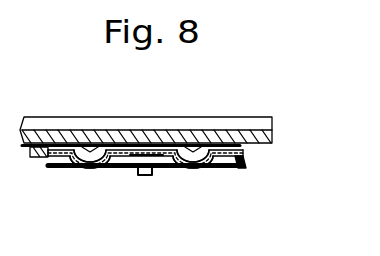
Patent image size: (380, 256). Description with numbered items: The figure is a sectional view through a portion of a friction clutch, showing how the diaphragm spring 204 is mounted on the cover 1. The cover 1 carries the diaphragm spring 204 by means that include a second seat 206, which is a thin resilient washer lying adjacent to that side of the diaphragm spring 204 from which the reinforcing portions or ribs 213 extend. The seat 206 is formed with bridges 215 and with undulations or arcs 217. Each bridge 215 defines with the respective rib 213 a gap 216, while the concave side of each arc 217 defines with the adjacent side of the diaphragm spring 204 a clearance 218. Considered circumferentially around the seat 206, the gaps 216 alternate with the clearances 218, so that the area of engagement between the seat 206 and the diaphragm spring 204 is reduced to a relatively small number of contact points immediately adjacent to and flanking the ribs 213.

The cover 1 is at (250, 122).
The diaphragm spring 204 is at (236, 148).
The second seat 206 is at (241, 169).
The reinforcing ribs 213 is at (88, 145).
The bridges 215 is at (72, 170).
The gap 216 is at (93, 166).
The undulations or arcs 217 is at (128, 162).
The clearance 218 is at (152, 176).